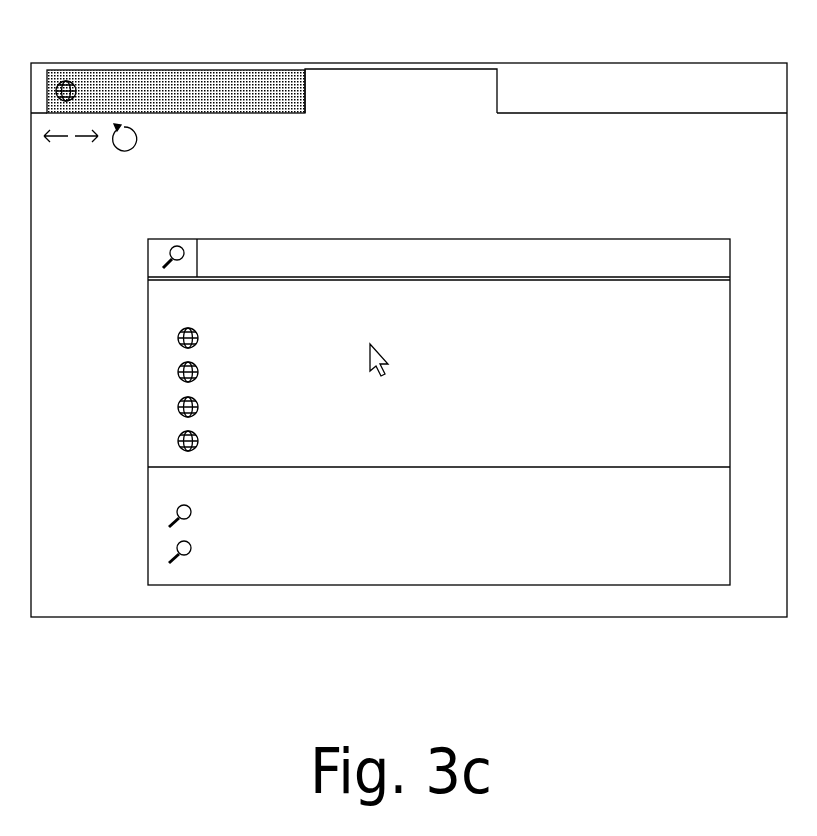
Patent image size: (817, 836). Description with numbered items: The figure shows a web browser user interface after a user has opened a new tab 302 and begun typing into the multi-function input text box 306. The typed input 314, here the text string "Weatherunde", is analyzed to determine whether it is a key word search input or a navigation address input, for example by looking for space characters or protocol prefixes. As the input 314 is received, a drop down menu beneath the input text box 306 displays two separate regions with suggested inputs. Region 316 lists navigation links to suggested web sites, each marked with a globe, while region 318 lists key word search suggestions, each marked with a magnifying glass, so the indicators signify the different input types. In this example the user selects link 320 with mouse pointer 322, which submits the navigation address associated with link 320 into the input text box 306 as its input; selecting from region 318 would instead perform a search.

The new tab 302 is at (437, 63).
The input text box 306 is at (545, 228).
The input 314 is at (240, 245).
The region 316 is at (238, 370).
The region 318 is at (147, 524).
The link 320 is at (323, 326).
The mouse pointer 322 is at (386, 354).